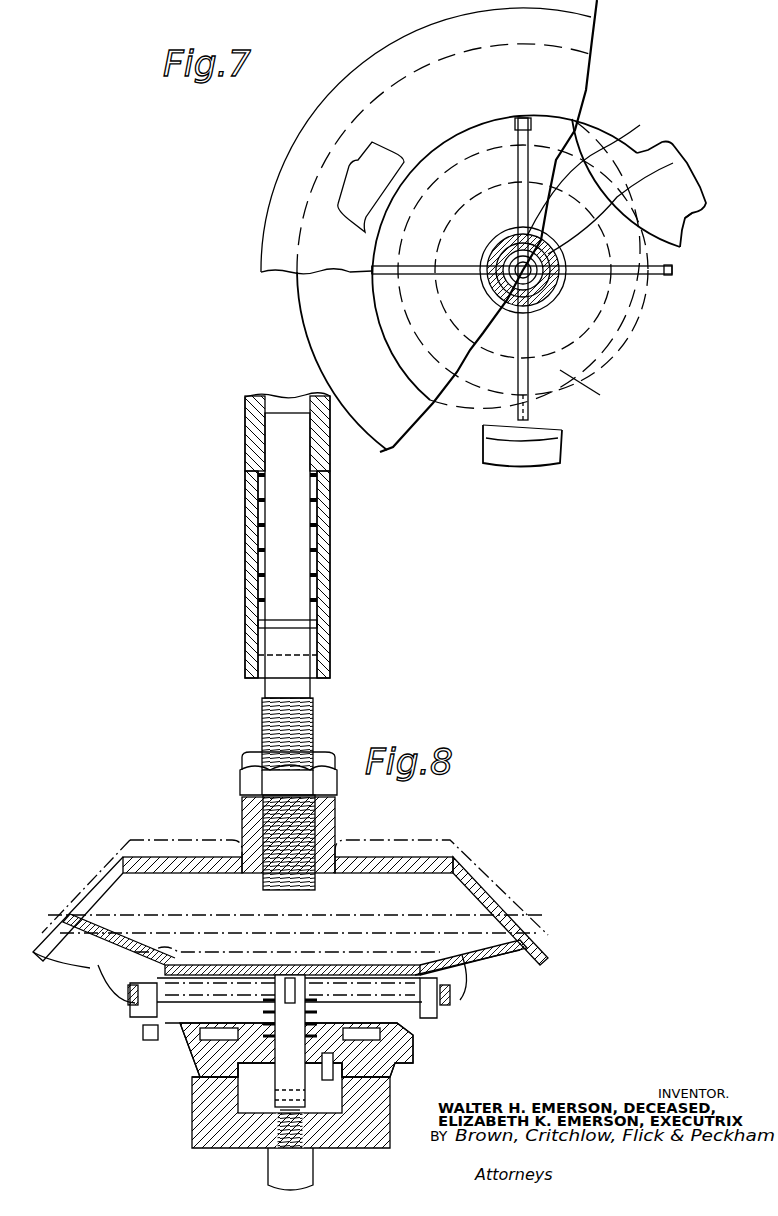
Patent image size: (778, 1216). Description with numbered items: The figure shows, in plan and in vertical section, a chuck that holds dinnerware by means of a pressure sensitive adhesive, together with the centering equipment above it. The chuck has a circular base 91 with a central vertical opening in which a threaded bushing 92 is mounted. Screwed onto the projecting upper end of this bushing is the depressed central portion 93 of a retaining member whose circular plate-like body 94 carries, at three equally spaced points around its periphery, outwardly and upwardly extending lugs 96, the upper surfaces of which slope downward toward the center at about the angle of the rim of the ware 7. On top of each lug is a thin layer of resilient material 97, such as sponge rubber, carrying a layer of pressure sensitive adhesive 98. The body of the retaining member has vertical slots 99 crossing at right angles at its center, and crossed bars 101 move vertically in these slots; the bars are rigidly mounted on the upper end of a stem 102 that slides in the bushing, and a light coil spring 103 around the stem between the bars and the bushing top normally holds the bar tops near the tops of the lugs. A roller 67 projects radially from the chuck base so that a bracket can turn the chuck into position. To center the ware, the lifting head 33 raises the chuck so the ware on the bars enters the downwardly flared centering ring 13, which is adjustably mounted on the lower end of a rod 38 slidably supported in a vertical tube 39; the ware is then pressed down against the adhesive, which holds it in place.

In FIG. 7, the ware 7 is at (313, 299).
In FIG. 8, the ware 7 is at (500, 955).
In FIG. 7, the centering ring 13 is at (283, 195).
In FIG. 8, the centering ring 13 is at (123, 862).
In FIG. 8, the lifting head 33 is at (200, 1135).
In FIG. 7, the rod 38 is at (512, 240).
In FIG. 8, the rod 38 is at (287, 697).
In FIG. 8, the vertical tube 39 is at (250, 605).
In FIG. 8, the roller 67 is at (150, 1040).
In FIG. 7, the circular base 91 is at (602, 383).
In FIG. 8, the circular base 91 is at (205, 1063).
In FIG. 7, the threaded bushing 92 is at (660, 146).
In FIG. 8, the threaded bushing 92 is at (266, 1075).
In FIG. 7, the depressed central portion 93 is at (690, 216).
In FIG. 8, the depressed central portion 93 is at (330, 1030).
In FIG. 7, the circular plate-like body 94 is at (657, 327).
In FIG. 8, the circular plate-like body 94 is at (443, 1005).
In FIG. 7, the lugs 96 is at (543, 437).
In FIG. 8, the lugs 96 is at (125, 985).
In FIG. 8, the resilient material 97 is at (90, 968).
In FIG. 7, the pressure sensitive adhesive 98 is at (543, 456).
In FIG. 8, the pressure sensitive adhesive 98 is at (470, 960).
In FIG. 7, the vertical slots 99 is at (674, 270).
In FIG. 8, the vertical slots 99 is at (400, 1005).
In FIG. 7, the crossed bars 101 is at (636, 278).
In FIG. 8, the crossed bars 101 is at (340, 990).
In FIG. 7, the stem 102 is at (600, 183).
In FIG. 8, the stem 102 is at (300, 1090).
In FIG. 7, the light coil spring 103 is at (592, 348).
In FIG. 8, the light coil spring 103 is at (262, 1010).